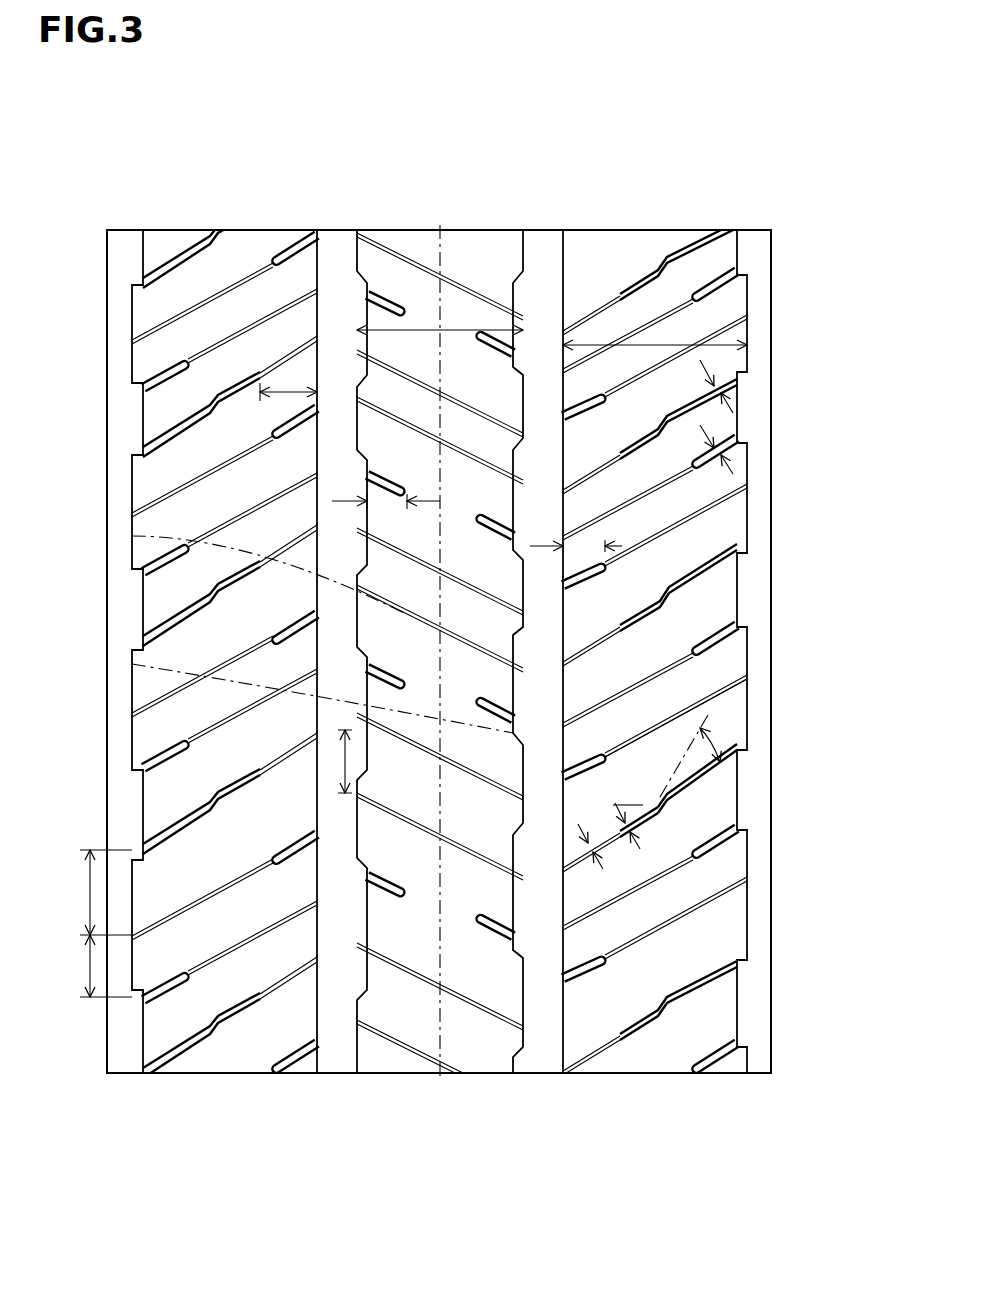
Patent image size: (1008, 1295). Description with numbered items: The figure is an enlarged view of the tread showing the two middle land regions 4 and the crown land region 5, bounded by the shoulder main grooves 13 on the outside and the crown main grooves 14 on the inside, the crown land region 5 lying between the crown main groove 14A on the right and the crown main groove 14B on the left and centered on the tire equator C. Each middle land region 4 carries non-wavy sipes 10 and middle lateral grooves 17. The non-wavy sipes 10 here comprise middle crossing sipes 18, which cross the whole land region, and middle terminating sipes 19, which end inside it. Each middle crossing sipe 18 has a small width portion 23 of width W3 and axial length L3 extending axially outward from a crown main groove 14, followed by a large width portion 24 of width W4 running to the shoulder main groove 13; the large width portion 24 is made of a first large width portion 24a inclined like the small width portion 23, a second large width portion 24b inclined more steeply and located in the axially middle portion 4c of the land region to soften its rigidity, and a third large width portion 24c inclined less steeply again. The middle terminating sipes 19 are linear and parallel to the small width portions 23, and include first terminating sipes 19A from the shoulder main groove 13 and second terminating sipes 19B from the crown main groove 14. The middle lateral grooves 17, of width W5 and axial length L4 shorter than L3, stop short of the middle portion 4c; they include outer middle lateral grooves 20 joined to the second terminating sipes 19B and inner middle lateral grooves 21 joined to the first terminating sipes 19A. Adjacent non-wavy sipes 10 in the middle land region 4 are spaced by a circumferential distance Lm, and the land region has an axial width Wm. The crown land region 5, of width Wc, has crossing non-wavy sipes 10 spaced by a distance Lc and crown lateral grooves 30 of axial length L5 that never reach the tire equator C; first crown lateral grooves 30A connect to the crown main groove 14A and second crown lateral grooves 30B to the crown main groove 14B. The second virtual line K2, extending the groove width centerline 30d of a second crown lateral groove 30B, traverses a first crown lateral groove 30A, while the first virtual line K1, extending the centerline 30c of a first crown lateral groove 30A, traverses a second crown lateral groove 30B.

The non-wavy sipe 10 is at (425, 987).
The shoulder main groove 13 is at (126, 258).
The middle land region 4 is at (225, 270).
The middle portion 4c is at (700, 655).
The crown main groove 14B is at (335, 258).
The crown main groove 14A is at (547, 258).
The crown main groove 14 is at (543, 1040).
The crown land region 5 is at (412, 250).
The tire equator C is at (436, 624).
The small width portion 23 is at (282, 350).
The first terminating sipe 19A is at (205, 900).
The second terminating sipe 19B is at (258, 960).
The middle terminating sipe 19 is at (713, 693).
The crown lateral groove 30 is at (170, 560).
The first crown lateral groove 30A is at (490, 515).
The second crown lateral groove 30B is at (385, 466).
The groove width centerline 30c is at (475, 707).
The groove width centerline 30d is at (404, 685).
The outer middle lateral groove 20 is at (745, 828).
The inner middle lateral groove 21 is at (583, 973).
The middle lateral groove 17 is at (670, 612).
The middle crossing sipe 18 is at (740, 395).
The large width portion 24 is at (733, 865).
The first large width portion 24a is at (590, 860).
The second large width portion 24b is at (605, 840).
The third large width portion 24c is at (640, 822).
The first virtual line K1 is at (132, 664).
The second virtual line K2 is at (132, 536).
The width of the crown land region Wc is at (462, 330).
The axial width of the middle land region Wm is at (668, 345).
The width of the small width portion W3 is at (640, 827).
The width of the large width portion W4 is at (727, 405).
The groove width of the middle lateral groove W5 is at (730, 447).
The axial length of the small width portion L3 is at (260, 392).
The axial length of the middle lateral groove L4 is at (622, 546).
The length of the crown lateral groove L5 is at (332, 501).
The distance between non-wavy sipes in the crown land region Lc is at (340, 770).
The distance between non-wavy sipes in the middle land regions Lm is at (86, 923).